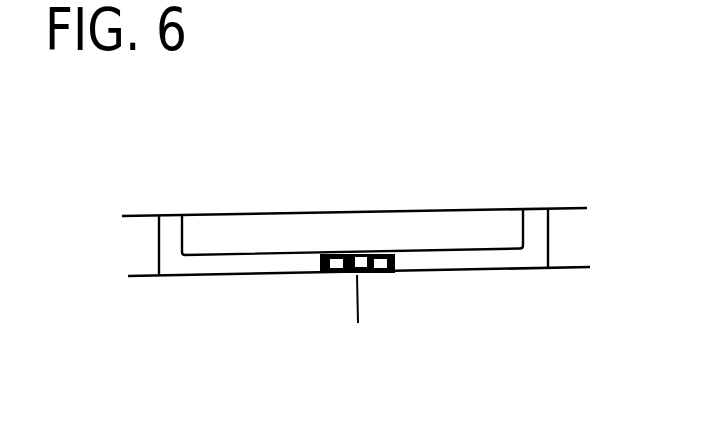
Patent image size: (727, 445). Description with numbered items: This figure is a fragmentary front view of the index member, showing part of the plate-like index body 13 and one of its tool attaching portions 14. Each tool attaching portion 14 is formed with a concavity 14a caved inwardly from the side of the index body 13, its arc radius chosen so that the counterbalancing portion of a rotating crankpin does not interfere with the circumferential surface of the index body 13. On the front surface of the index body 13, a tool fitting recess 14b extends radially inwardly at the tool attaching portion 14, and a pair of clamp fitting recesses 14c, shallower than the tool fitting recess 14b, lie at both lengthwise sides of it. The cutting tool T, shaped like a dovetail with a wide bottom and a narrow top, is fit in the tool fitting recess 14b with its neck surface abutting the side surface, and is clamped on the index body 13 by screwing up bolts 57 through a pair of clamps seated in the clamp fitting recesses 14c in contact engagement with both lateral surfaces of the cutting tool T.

The index body 13 is at (567, 228).
The tool attaching portion 14 is at (352, 264).
The concavity 14a is at (184, 242).
The tool fitting recess 14b is at (360, 250).
The clamp fitting recess 14c is at (312, 272).
The bolt 57 is at (328, 277).
The cutting tool T is at (352, 323).